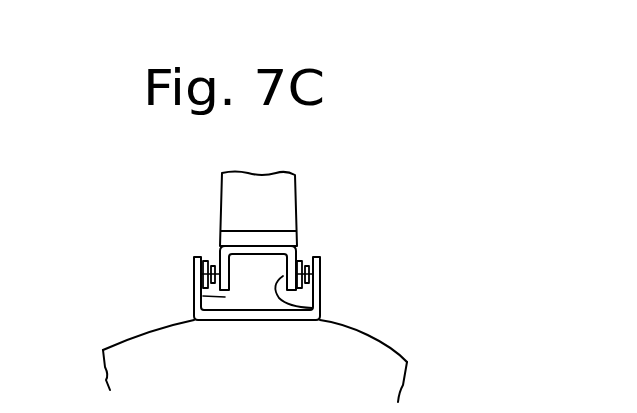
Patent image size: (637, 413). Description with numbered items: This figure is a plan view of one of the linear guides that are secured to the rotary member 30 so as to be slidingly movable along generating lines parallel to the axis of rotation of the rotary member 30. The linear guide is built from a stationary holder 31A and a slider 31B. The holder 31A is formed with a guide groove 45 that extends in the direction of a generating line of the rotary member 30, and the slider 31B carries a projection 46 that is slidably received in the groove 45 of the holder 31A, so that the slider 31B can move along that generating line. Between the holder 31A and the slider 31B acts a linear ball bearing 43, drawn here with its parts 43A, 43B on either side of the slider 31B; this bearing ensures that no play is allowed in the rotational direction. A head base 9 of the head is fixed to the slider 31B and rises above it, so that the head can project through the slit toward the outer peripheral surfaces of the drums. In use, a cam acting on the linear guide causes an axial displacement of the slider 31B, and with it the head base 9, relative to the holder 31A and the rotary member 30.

The head base 9 is at (285, 190).
The rotary member 30 is at (395, 350).
The stationary holder 31A is at (203, 294).
The slider 31B is at (247, 243).
The linear ball bearing 43 is at (440, 228).
The nut 43A is at (204, 268).
The bolt 43B is at (302, 254).
The guide groove 45 is at (203, 304).
The projection 46 is at (312, 309).